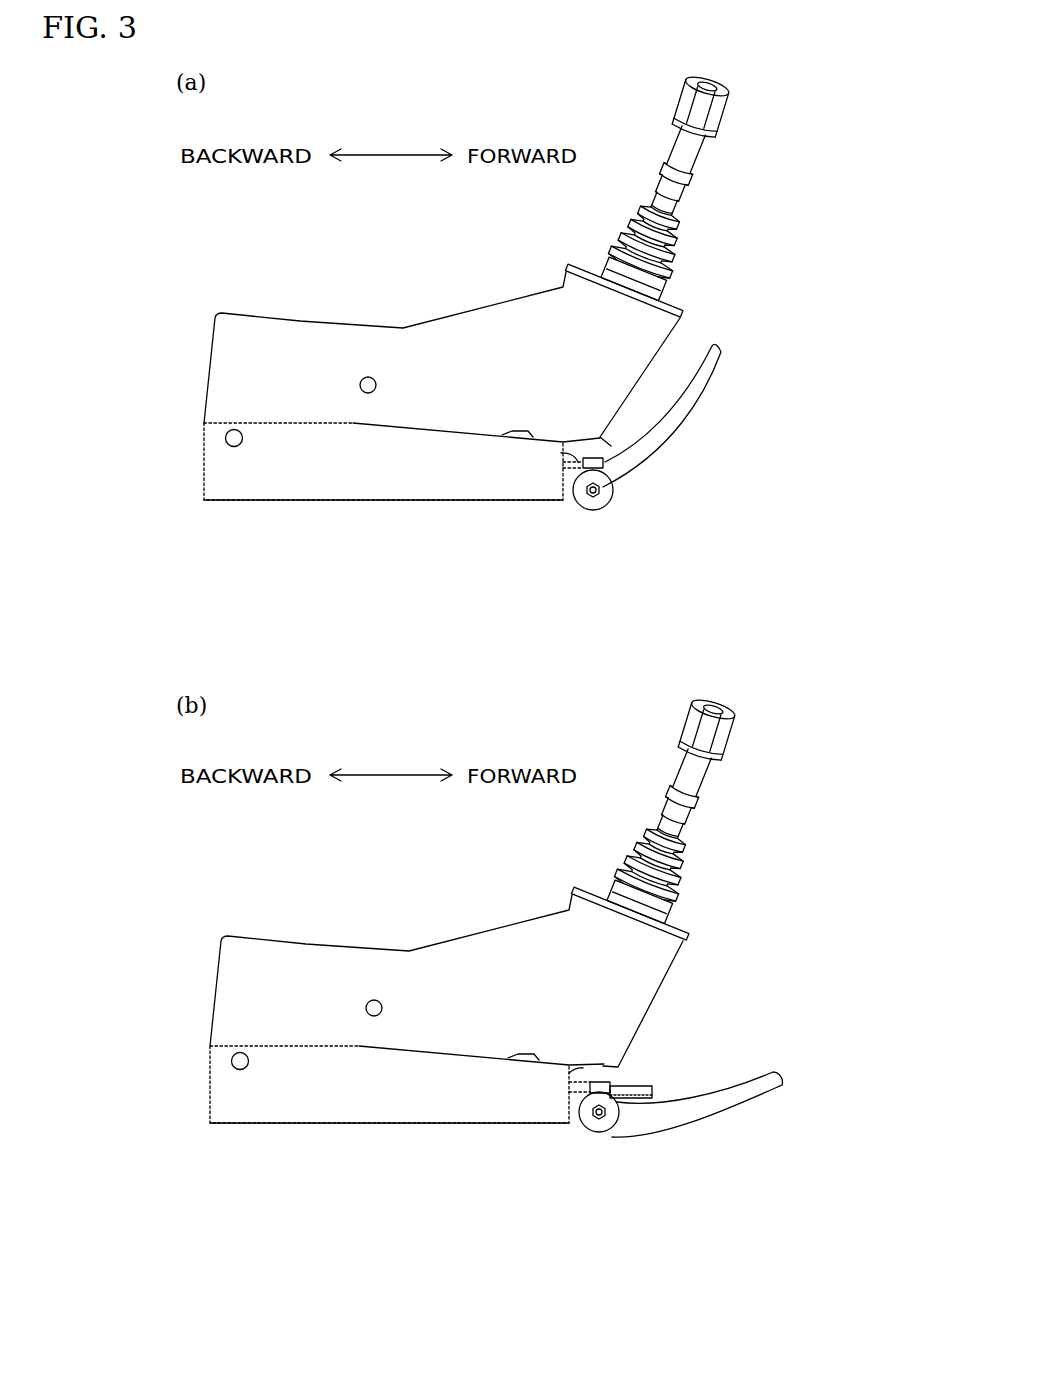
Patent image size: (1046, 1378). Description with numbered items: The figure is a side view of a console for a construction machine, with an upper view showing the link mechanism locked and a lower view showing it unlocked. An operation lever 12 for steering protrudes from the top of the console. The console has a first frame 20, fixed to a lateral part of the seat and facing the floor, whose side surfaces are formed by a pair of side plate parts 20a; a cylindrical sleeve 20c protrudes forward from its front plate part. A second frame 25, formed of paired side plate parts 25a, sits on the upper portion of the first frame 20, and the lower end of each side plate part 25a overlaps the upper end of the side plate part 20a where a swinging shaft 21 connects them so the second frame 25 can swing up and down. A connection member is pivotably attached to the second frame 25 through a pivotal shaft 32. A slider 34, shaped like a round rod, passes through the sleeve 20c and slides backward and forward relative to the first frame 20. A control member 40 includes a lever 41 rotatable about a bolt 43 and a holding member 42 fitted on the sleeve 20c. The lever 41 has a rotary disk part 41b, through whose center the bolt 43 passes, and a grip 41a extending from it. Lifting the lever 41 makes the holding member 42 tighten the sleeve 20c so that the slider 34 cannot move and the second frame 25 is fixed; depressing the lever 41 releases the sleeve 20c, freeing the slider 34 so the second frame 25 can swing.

The operation lever 12 is at (668, 153).
The first frame 20 is at (410, 514).
The side plate part 20a is at (341, 484).
The sleeve 20c is at (561, 453).
The swinging shaft 21 is at (233, 447).
The second frame 25 is at (498, 286).
The side plate part 25a is at (307, 330).
The pivotal shaft 32 is at (368, 377).
The slider 34 is at (633, 1086).
The control member 40 is at (704, 768).
The lever 41 is at (704, 788).
The grip 41a is at (694, 404).
The rotary disk part 41b is at (586, 508).
The holding member 42 is at (603, 457).
The bolt 43 is at (603, 492).